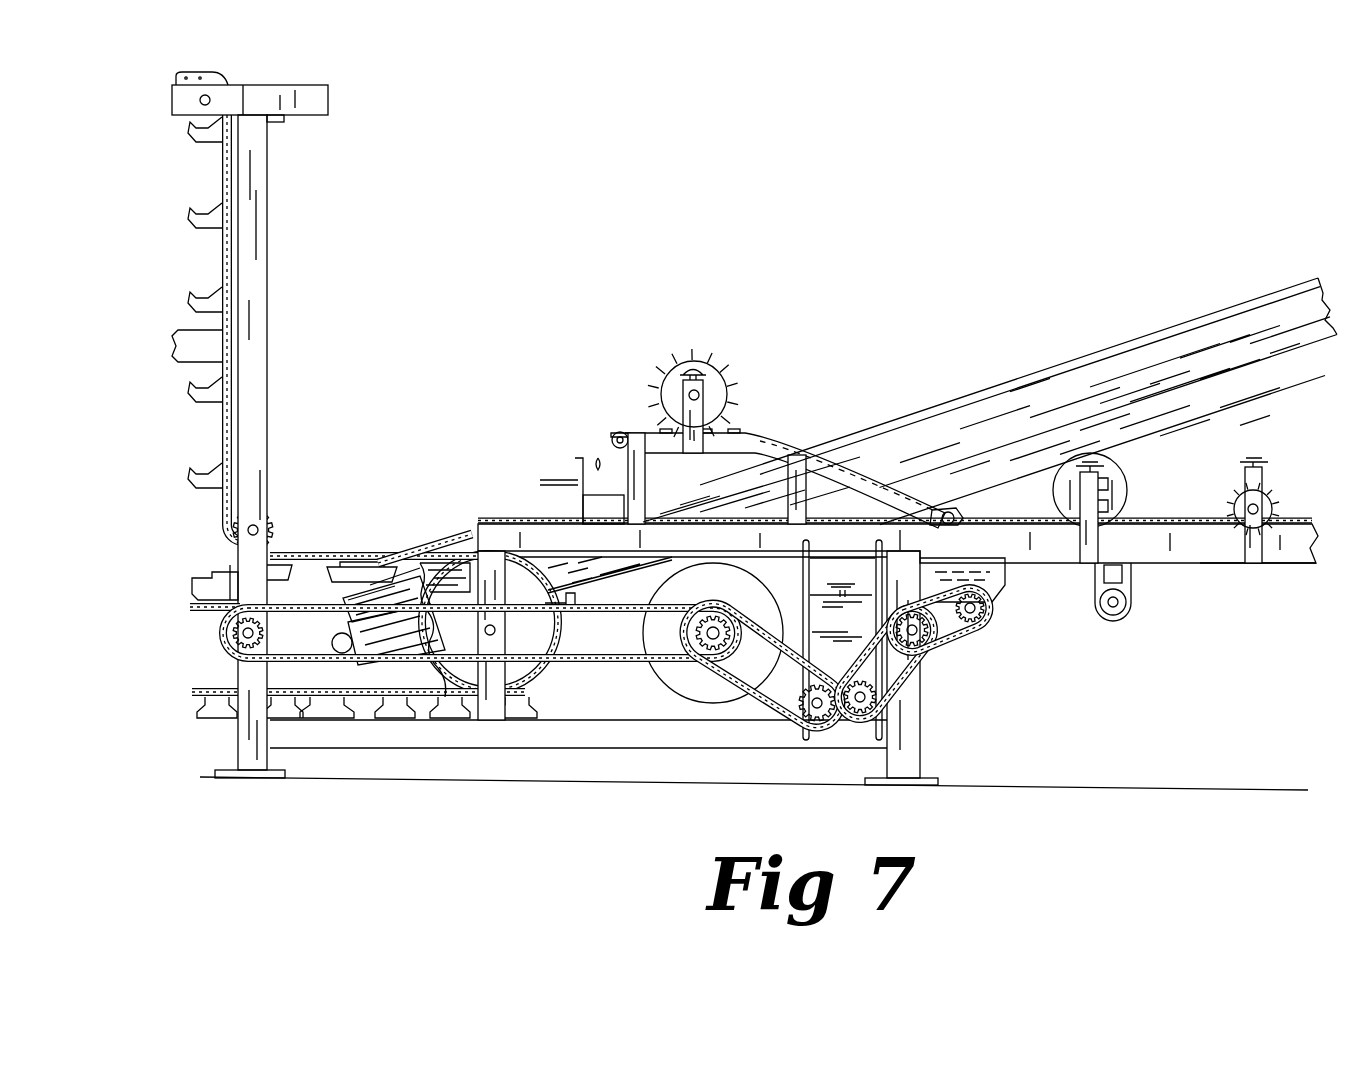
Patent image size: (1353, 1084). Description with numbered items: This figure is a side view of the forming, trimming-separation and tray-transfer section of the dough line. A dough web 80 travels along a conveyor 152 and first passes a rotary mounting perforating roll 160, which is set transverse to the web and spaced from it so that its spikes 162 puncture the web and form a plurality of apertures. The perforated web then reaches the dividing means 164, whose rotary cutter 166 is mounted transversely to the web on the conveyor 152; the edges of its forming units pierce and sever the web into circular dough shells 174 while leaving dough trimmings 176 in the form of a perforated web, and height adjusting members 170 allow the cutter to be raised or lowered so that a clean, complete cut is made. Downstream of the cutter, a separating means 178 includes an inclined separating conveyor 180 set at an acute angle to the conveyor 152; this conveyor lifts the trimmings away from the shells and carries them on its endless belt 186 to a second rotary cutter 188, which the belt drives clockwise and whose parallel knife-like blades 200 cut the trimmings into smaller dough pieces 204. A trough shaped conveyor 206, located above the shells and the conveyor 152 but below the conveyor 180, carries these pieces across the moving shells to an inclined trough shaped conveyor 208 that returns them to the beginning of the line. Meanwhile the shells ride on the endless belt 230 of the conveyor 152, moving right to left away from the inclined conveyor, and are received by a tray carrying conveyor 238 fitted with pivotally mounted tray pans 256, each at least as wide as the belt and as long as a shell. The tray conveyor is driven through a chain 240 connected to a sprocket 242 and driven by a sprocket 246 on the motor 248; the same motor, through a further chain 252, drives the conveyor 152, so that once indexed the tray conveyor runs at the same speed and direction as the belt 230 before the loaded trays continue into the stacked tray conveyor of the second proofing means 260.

The second proofing means 260 is at (332, 100).
The tray carrying conveyor 238 is at (312, 550).
The endless belt 230 is at (400, 550).
The sprocket 242 is at (268, 642).
The chain 240 is at (346, 644).
The tray pans 256 is at (578, 680).
The sprocket 246 is at (708, 622).
The motor 248 is at (712, 705).
The chain 252 is at (795, 720).
The smaller dough pieces 204 is at (655, 432).
The trough shaped conveyor 206 is at (578, 480).
The endless belt 186 is at (622, 448).
The second rotary cutter 188 is at (713, 365).
The knife-like blades 200 is at (732, 410).
The inclined separating conveyor 180 is at (742, 435).
The inclined trough shaped conveyor 208 is at (993, 387).
The separating means 178 is at (943, 510).
The dough shells 174 is at (892, 490).
The dough trimmings 176 is at (955, 523).
The dough web 80 is at (1007, 523).
The height adjusting members 170 is at (1102, 483).
The dividing means 164 is at (1142, 470).
The rotary cutter 166 is at (1074, 525).
The spikes 162 is at (1228, 507).
The rotary mounting perforating roll 160 is at (1270, 487).
The conveyor 152 is at (1270, 563).